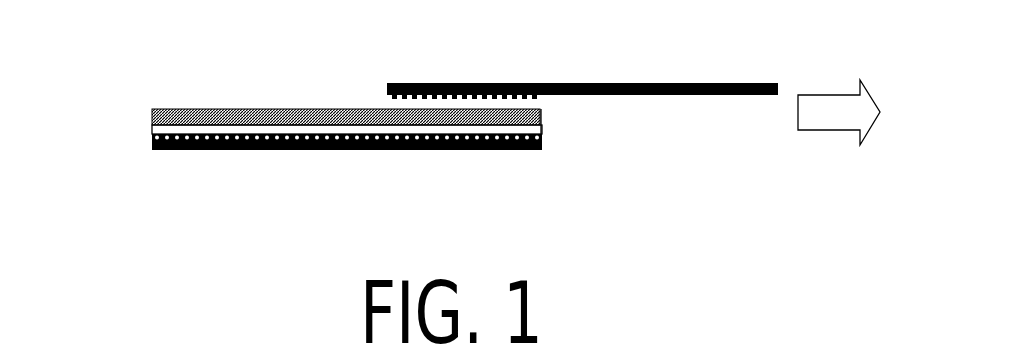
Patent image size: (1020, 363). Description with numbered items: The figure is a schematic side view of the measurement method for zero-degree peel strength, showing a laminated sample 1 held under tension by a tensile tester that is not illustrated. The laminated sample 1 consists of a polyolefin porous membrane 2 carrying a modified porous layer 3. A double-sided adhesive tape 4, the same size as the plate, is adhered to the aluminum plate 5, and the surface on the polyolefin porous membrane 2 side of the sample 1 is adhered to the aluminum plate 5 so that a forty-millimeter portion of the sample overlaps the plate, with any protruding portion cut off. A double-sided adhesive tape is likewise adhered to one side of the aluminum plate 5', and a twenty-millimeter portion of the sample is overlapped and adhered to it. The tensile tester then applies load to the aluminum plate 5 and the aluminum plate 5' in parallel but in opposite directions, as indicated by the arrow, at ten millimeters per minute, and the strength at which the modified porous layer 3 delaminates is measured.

The laminated sample 1 is at (558, 118).
The polyolefin porous membrane 2 is at (152, 129).
The modified porous layer 3 is at (185, 108).
The double-sided adhesive tape 4 is at (383, 98).
The aluminum plate 5 is at (582, 54).
The aluminum plate 5' is at (347, 177).